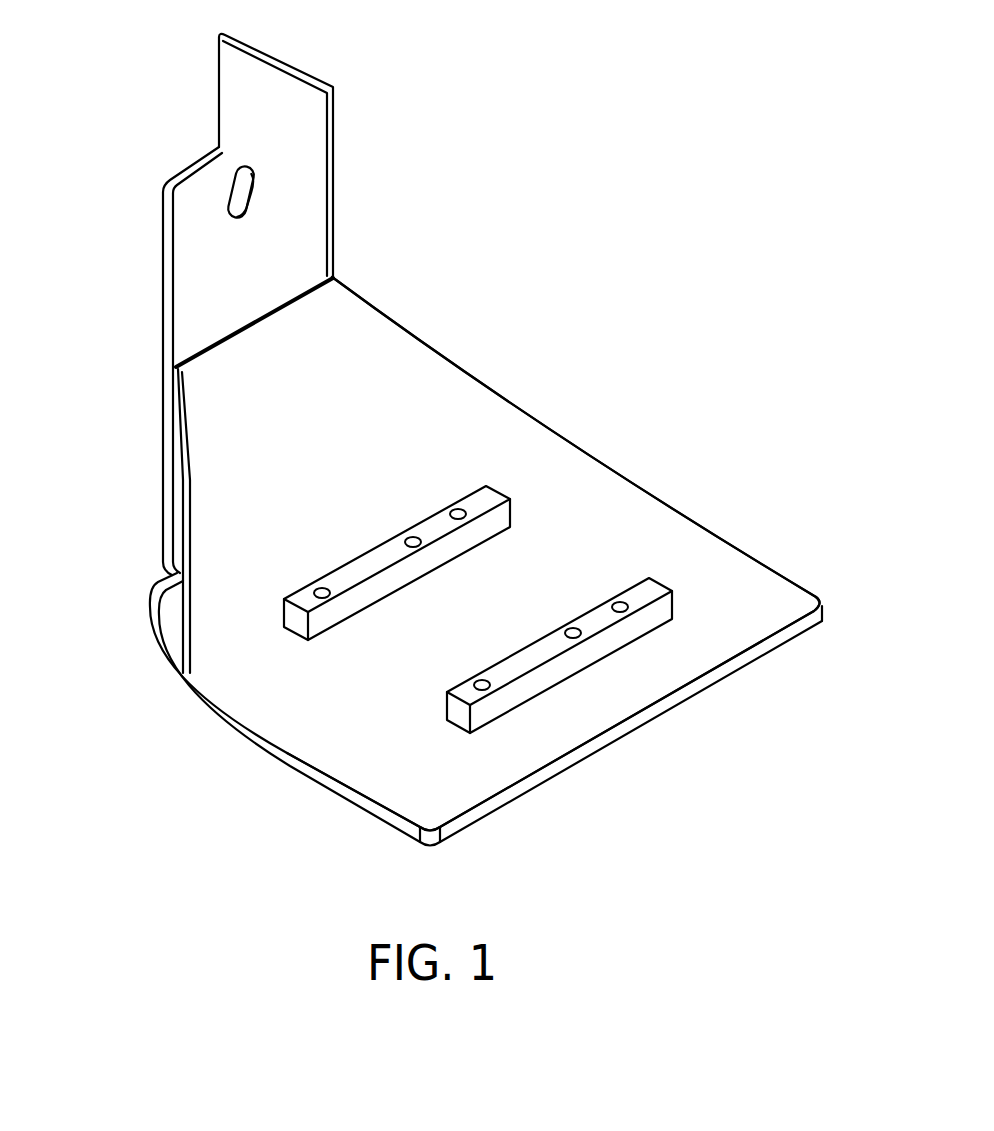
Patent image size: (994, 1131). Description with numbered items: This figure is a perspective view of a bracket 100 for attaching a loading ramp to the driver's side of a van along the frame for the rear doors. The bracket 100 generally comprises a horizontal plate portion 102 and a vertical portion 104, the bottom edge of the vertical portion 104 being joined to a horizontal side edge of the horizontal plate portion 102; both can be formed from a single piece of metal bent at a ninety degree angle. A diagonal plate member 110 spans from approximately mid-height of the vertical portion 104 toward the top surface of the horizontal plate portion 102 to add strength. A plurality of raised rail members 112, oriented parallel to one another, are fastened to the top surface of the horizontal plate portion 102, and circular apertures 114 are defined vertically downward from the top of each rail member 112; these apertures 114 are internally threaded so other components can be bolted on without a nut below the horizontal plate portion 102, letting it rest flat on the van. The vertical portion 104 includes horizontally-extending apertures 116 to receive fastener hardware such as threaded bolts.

The bracket 100 is at (716, 835).
The horizontal plate portion 102 is at (333, 720).
The vertical portion 104 is at (310, 172).
The diagonal plate member 110 is at (410, 387).
The raised rail members 112 is at (487, 490).
The apertures 114 is at (292, 614).
The horizontally-extending apertures 116 is at (232, 191).